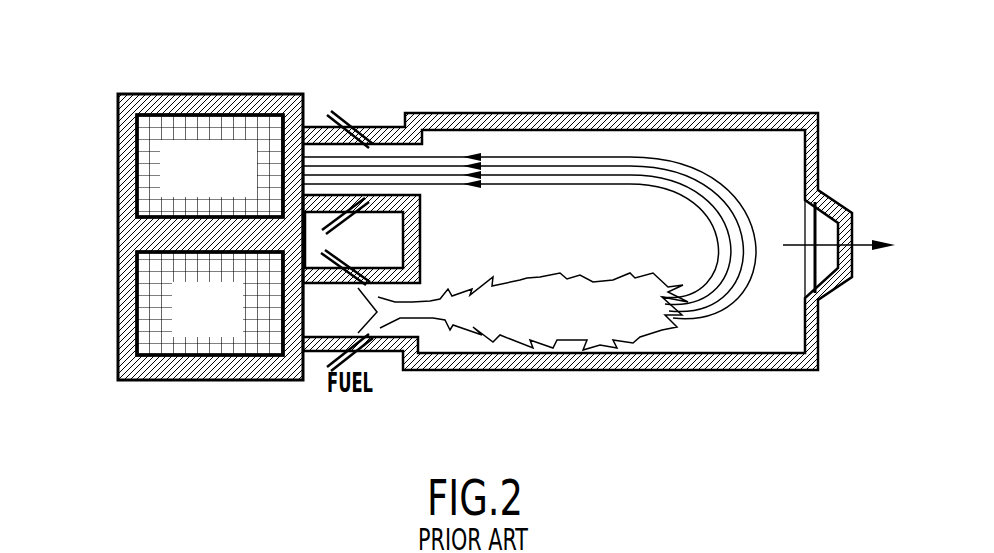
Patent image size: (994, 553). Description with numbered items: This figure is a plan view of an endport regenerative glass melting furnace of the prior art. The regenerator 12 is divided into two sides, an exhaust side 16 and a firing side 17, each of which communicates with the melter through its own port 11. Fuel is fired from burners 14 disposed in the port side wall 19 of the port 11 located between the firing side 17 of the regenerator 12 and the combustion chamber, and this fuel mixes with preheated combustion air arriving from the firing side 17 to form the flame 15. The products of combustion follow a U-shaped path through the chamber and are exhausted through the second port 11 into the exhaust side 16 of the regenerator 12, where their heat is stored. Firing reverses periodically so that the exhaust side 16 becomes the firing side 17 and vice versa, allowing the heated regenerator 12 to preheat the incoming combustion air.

The combustion air port 11 is at (383, 127).
The regenerator 12 is at (118, 130).
The burners 14 is at (342, 116).
The flame 15 is at (533, 280).
The exhaust side 16 is at (233, 130).
The firing side 17 is at (201, 350).
The port side wall 19 is at (346, 284).